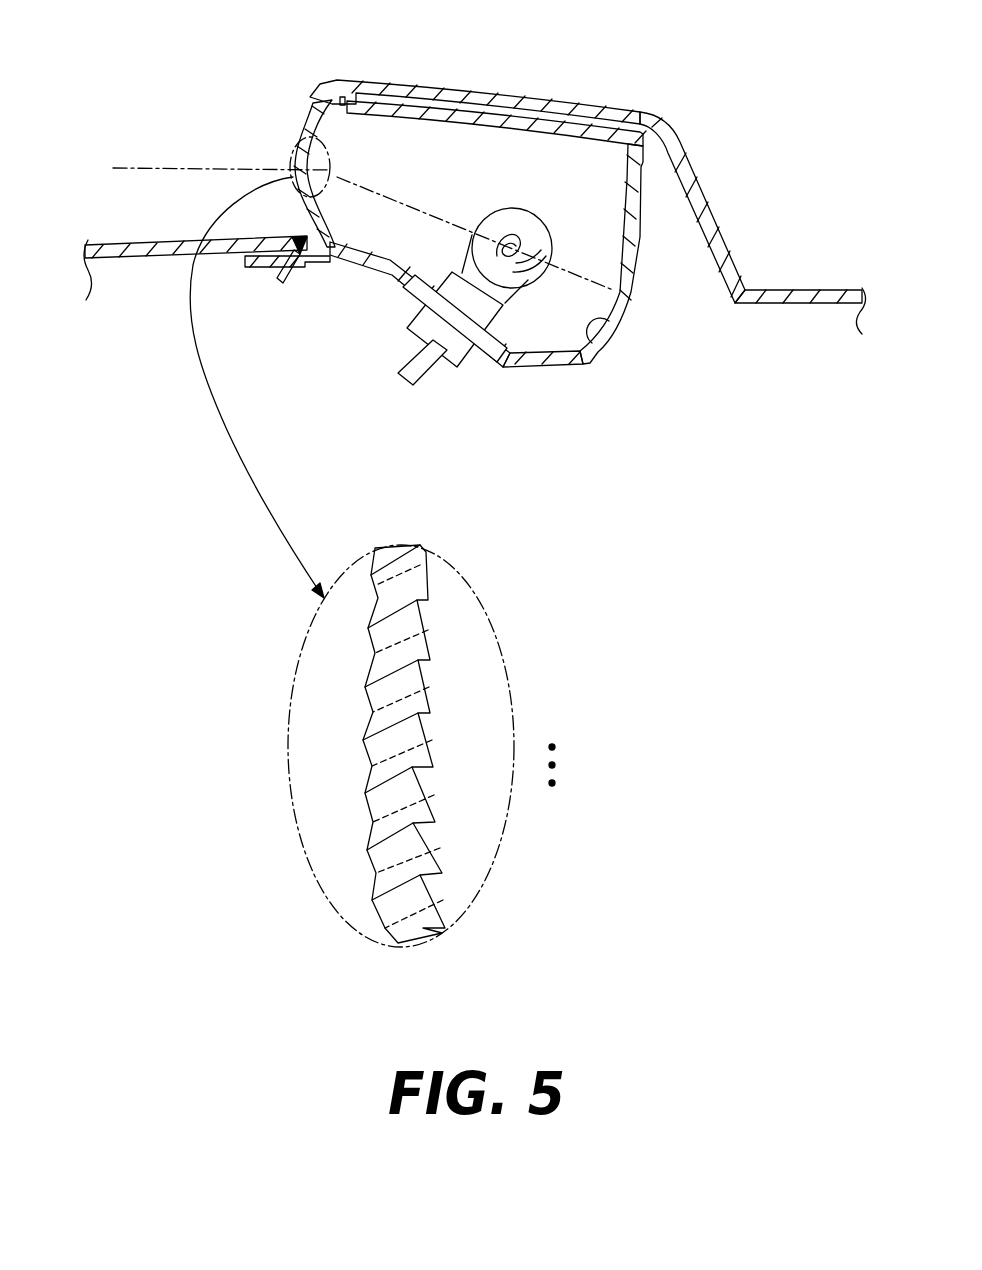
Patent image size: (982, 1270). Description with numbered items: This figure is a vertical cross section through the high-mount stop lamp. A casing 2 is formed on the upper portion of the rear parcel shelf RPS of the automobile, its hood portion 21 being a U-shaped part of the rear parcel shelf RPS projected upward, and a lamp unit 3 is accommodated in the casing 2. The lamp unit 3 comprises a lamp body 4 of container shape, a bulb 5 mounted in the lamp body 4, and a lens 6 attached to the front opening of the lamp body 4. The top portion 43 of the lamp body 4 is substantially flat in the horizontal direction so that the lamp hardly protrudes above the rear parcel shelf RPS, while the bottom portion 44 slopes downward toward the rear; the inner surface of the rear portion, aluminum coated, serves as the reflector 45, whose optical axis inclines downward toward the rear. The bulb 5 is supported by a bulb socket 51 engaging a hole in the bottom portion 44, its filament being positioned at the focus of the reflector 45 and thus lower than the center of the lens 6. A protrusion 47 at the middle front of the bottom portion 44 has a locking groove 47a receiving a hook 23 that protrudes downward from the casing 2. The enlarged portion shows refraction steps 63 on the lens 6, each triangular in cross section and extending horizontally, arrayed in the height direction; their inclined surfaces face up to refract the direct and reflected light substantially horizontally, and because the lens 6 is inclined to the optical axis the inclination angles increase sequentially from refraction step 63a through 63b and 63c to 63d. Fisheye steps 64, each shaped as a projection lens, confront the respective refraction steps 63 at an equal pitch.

The casing 2 is at (451, 78).
The hood portion 21 is at (633, 110).
The rear parcel shelf RPS is at (787, 290).
The top portion 43 is at (537, 130).
The reflector 45 is at (603, 355).
The bottom portion 44 is at (548, 364).
The lamp body 4 is at (521, 372).
The lamp unit 3 is at (632, 332).
The lens 6 is at (320, 103).
The bulb 5 is at (520, 252).
The bulb socket 51 is at (447, 348).
The protrusion 47 is at (250, 262).
The locking groove 47a is at (305, 265).
The hook 23 is at (280, 268).
The fisheye steps 64 is at (363, 693).
The refraction steps 63 is at (428, 628).
The refraction step 63a is at (430, 591).
The refraction step 63b is at (430, 652).
The refraction step 63c is at (430, 699).
The refraction step 63d is at (430, 757).